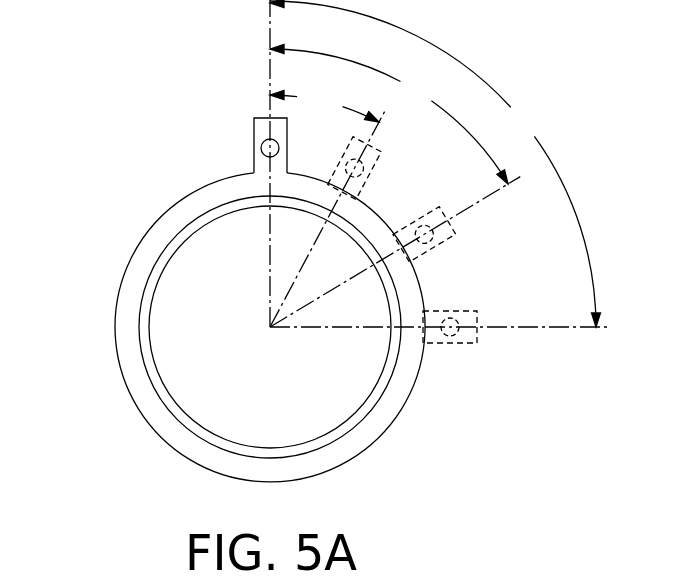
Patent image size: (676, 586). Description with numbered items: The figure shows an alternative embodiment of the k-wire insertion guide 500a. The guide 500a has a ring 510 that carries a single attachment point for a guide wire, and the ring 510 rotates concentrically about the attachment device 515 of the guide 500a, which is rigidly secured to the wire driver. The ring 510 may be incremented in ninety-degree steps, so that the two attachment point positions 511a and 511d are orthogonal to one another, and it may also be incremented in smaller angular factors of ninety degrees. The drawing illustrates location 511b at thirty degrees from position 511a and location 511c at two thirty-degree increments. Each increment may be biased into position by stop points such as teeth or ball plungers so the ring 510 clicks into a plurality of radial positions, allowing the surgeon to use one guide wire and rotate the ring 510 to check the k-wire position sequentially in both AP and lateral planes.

The guide 500a is at (137, 210).
The ring 510 is at (117, 327).
The attachment device 515 is at (220, 436).
The attachment point position 511a is at (254, 135).
The attachment point location at 30 degrees 511b is at (373, 177).
The attachment point location at two 30 degree increments 511c is at (442, 245).
The attachment point position 511d is at (458, 343).